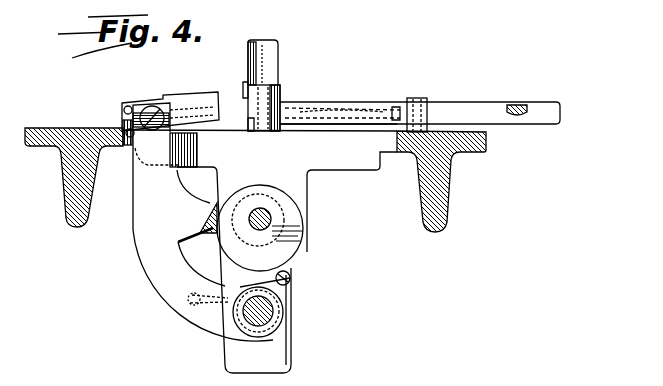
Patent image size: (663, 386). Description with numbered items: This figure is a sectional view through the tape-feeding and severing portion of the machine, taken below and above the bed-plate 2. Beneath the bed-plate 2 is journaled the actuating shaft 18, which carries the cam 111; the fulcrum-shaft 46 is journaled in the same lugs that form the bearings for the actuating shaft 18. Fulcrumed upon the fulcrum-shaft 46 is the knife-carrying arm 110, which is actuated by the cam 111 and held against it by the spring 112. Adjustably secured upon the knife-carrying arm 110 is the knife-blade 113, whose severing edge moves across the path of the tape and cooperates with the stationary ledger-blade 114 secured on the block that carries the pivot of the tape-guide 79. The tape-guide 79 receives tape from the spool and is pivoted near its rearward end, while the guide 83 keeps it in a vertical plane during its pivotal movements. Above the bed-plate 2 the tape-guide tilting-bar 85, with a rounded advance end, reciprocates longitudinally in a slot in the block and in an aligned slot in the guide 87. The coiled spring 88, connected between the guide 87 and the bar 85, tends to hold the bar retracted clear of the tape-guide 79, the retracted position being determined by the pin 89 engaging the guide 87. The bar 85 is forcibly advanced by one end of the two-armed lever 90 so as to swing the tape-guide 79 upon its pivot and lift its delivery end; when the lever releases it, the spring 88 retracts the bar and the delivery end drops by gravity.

The bed-plate 2 is at (488, 149).
The actuating shaft 18 is at (266, 214).
The fulcrum-shaft 46 is at (273, 309).
The tape-guide 79 is at (248, 73).
The guide 83 is at (245, 95).
The tape-guide tilting-bar 85 is at (458, 107).
The guide 87 is at (425, 100).
The coiled spring 88 is at (397, 107).
The pin 89 is at (385, 122).
The two-armed lever 90 is at (515, 105).
The knife-carrying arm 110 is at (143, 258).
The cam 111 is at (263, 193).
The spring 112 is at (290, 280).
The knife-blade 113 is at (188, 98).
The ledger-blade 114 is at (252, 126).